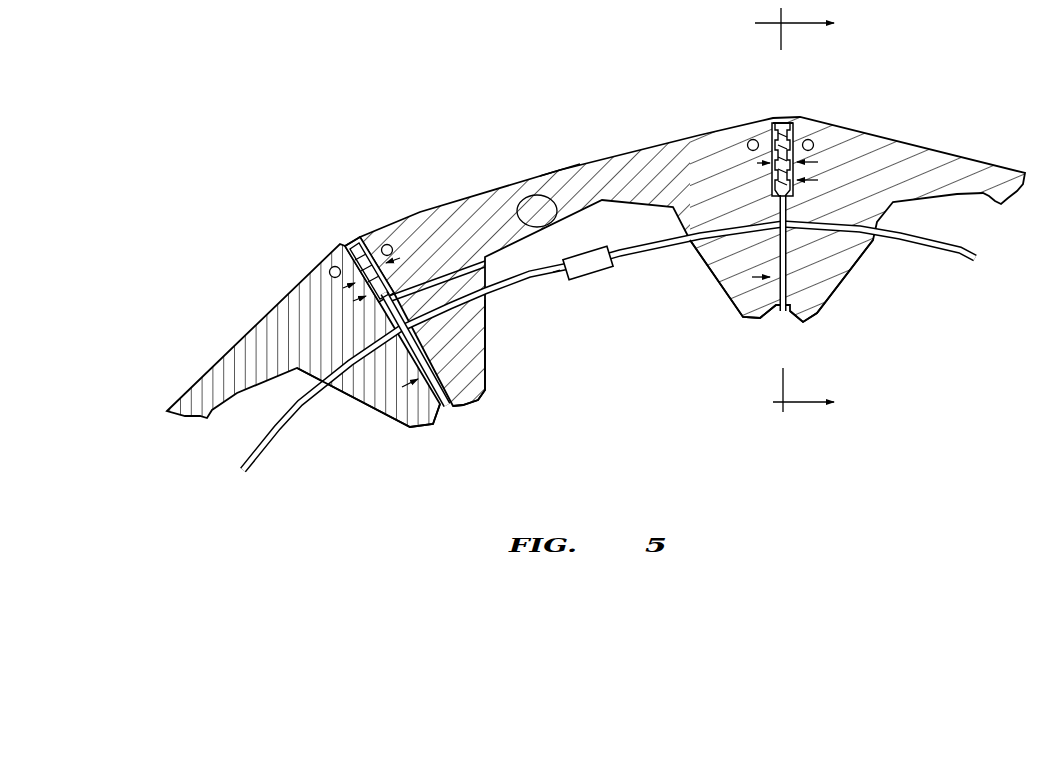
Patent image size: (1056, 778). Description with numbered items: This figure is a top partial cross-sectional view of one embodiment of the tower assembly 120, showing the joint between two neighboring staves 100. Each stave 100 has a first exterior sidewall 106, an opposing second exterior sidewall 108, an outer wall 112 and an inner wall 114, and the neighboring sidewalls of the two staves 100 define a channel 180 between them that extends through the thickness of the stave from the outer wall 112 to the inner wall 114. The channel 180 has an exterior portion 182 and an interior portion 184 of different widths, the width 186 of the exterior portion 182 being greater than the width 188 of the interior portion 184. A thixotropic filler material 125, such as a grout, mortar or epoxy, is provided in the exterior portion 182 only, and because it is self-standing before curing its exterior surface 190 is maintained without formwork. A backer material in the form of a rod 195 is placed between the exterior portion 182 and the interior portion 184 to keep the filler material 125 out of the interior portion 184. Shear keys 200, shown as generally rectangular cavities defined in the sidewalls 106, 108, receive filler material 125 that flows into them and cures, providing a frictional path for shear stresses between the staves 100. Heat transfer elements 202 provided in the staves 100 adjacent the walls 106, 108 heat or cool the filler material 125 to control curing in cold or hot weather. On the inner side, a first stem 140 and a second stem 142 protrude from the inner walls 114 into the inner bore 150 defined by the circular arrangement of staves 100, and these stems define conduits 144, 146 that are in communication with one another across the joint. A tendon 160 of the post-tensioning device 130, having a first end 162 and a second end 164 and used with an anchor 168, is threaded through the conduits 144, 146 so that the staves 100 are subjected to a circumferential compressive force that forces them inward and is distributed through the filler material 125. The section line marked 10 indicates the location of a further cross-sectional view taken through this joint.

The section line 10 is at (812, 210).
The stave 100 is at (247, 320).
The first exterior sidewall 106 is at (362, 240).
The second exterior sidewall 108 is at (344, 246).
The outer wall 112 is at (560, 178).
The inner wall 114 is at (520, 206).
The tower assembly 120 is at (343, 137).
The filler material 125 is at (355, 238).
The post-tensioning device 130 is at (607, 357).
The first stem 140 is at (488, 362).
The second stem 142 is at (390, 410).
The conduit 144 is at (423, 348).
The conduit 146 is at (325, 388).
The inner bore 150 is at (633, 452).
The tendon 160 is at (260, 458).
The first end 162 is at (558, 278).
The second end 164 is at (614, 262).
The anchor 168 is at (591, 282).
The channel 180 is at (450, 410).
The exterior portion 182 is at (350, 288).
The interior portion 184 is at (439, 366).
The width 186 is at (358, 300).
The width 188 is at (483, 378).
The exterior surface 190 is at (347, 242).
The rod 195 is at (427, 281).
The shear key 200 is at (868, 102).
The heat transfer element 202 is at (389, 244).